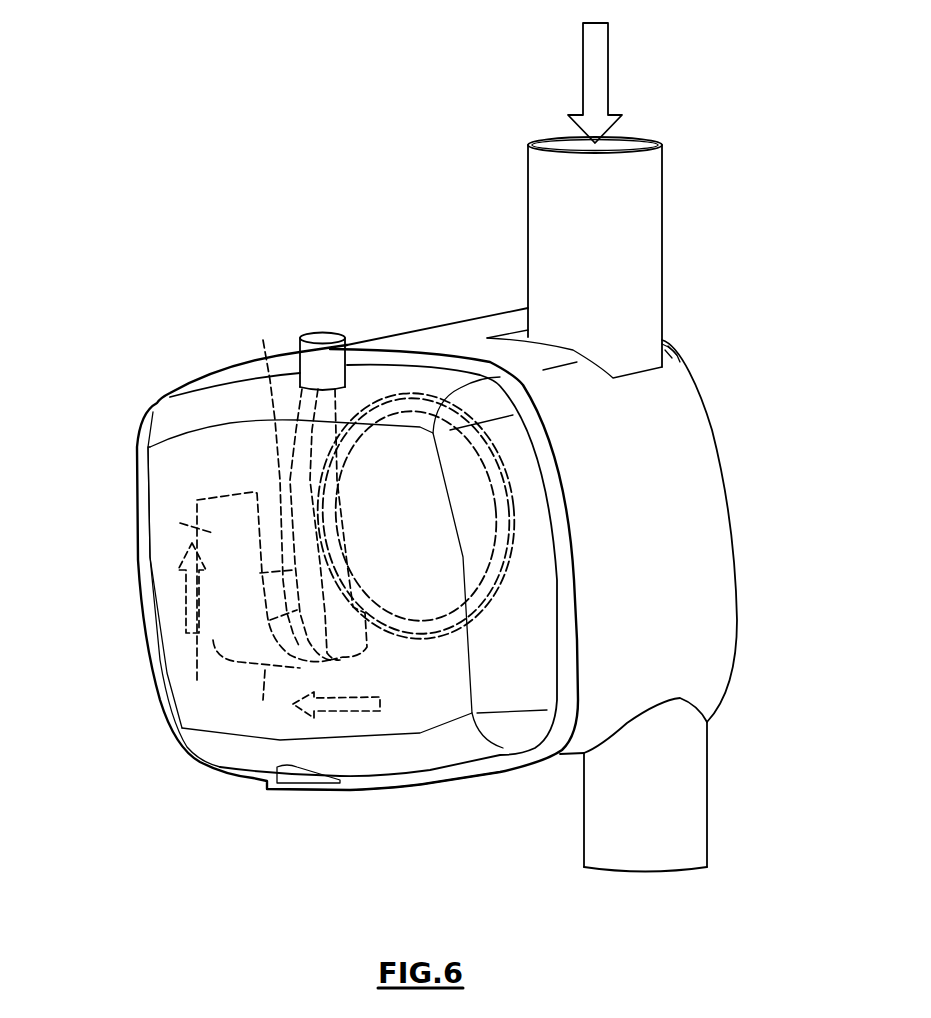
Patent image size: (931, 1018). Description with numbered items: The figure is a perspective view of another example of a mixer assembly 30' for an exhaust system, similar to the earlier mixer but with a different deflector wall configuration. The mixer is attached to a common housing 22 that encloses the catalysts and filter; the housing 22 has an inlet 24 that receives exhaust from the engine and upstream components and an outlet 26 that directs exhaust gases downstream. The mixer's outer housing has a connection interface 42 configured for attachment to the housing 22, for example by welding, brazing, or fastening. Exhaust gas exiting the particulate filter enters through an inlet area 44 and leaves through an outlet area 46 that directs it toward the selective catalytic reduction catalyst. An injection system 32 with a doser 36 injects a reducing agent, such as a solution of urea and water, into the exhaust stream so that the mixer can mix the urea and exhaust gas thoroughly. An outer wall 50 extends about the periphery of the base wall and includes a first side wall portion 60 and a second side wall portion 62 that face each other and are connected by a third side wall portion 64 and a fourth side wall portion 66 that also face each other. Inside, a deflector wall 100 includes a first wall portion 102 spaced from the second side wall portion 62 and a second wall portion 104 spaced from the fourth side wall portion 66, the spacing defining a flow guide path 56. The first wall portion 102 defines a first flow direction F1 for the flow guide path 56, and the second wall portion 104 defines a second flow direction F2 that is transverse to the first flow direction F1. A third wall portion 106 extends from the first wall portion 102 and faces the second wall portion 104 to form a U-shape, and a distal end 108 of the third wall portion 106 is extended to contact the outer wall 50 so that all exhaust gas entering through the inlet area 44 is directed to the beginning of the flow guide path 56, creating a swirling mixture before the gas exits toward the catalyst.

The housing 22 is at (693, 620).
The inlet 24 is at (650, 227).
The outlet 26 is at (695, 787).
The mixer assembly 30' is at (108, 306).
The injection system 32 is at (318, 300).
The doser 36 is at (322, 355).
The connection interface 42 is at (580, 707).
The inlet area 44 is at (440, 635).
The outlet area 46 is at (277, 500).
The outer wall 50 is at (227, 753).
The flow guide path 56 is at (207, 673).
The first side wall portion 60 is at (248, 390).
The second side wall portion 62 is at (437, 772).
The third side wall portion 64 is at (525, 668).
The fourth side wall portion 66 is at (150, 667).
The deflector wall 100 is at (343, 643).
The first wall portion 102 is at (265, 670).
The second wall portion 104 is at (180, 523).
The third wall portion 106 is at (317, 473).
The distal end 108 is at (263, 340).
The first flow direction F1 is at (350, 700).
The second flow direction F2 is at (185, 597).